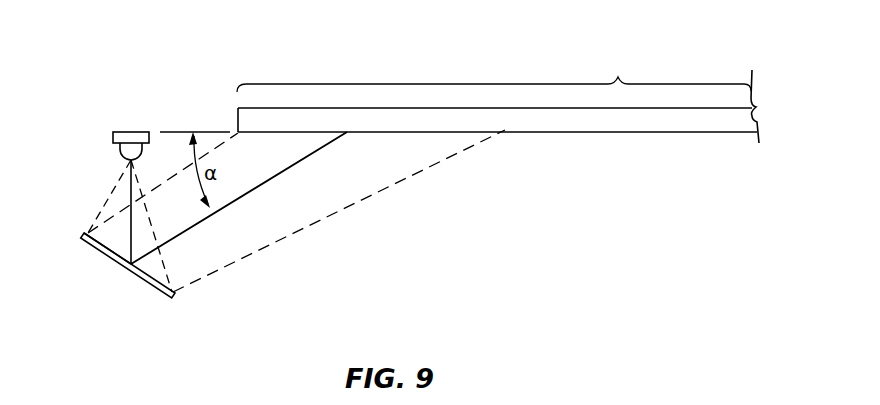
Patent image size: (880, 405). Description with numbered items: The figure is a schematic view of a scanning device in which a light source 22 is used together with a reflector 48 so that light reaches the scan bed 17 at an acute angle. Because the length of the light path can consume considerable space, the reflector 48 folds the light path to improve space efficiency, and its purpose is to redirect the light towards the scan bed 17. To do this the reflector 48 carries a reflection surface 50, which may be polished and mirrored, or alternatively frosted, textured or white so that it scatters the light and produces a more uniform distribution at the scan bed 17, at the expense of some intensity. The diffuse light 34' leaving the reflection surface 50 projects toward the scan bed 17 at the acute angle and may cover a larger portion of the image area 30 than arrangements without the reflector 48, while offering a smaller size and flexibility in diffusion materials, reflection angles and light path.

The light source 22 is at (112, 139).
The image area 30 is at (497, 91).
The scan bed 17 is at (733, 121).
The reflection surface 50 is at (93, 229).
The reflector 48 is at (116, 271).
The diffuse light 34' is at (339, 211).